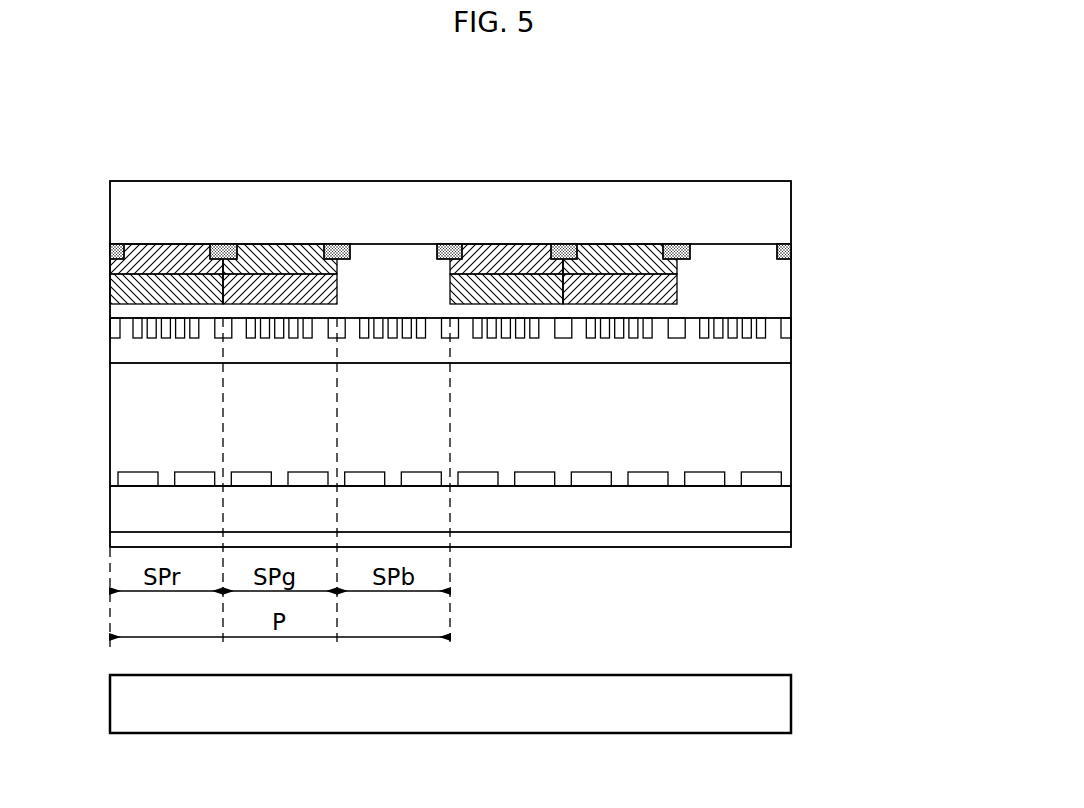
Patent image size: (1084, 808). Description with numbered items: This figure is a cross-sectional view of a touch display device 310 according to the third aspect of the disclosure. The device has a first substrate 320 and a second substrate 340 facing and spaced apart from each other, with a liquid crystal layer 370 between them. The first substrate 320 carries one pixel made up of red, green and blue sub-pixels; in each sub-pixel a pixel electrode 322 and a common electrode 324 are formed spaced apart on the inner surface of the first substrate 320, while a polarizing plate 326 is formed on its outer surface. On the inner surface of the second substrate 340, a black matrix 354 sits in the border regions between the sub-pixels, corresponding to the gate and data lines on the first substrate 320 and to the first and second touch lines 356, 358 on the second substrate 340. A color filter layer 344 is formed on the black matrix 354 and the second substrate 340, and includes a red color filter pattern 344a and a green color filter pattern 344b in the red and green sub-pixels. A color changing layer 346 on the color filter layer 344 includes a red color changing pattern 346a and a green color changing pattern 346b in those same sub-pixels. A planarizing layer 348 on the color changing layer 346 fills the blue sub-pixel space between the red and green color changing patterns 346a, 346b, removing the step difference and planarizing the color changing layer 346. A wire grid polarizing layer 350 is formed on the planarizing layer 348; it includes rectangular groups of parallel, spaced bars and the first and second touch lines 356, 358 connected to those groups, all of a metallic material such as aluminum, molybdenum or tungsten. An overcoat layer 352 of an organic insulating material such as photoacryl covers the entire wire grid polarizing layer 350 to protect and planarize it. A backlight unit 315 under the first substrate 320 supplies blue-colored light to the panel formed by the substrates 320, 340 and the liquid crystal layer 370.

The touch display device 310 is at (482, 111).
The backlight unit 315 is at (791, 702).
The first substrate 320 is at (791, 509).
The pixel electrode 322 is at (475, 487).
The common electrode 324 is at (541, 487).
The polarizing plate 326 is at (791, 541).
The second substrate 340 is at (791, 208).
The color filter layer 344 is at (297, 124).
The red color filter pattern 344a is at (168, 243).
The green color filter pattern 344b is at (283, 243).
The color changing layer 346 is at (172, 407).
The red color changing pattern 346a is at (178, 305).
The green color changing pattern 346b is at (276, 305).
The planarizing layer 348 is at (791, 278).
The wire grid polarizing layer 350 is at (785, 330).
The overcoat layer 352 is at (791, 364).
The black matrix 354 is at (564, 244).
The first touch line 356 is at (560, 345).
The second touch line 358 is at (450, 328).
The liquid crystal layer 370 is at (791, 413).